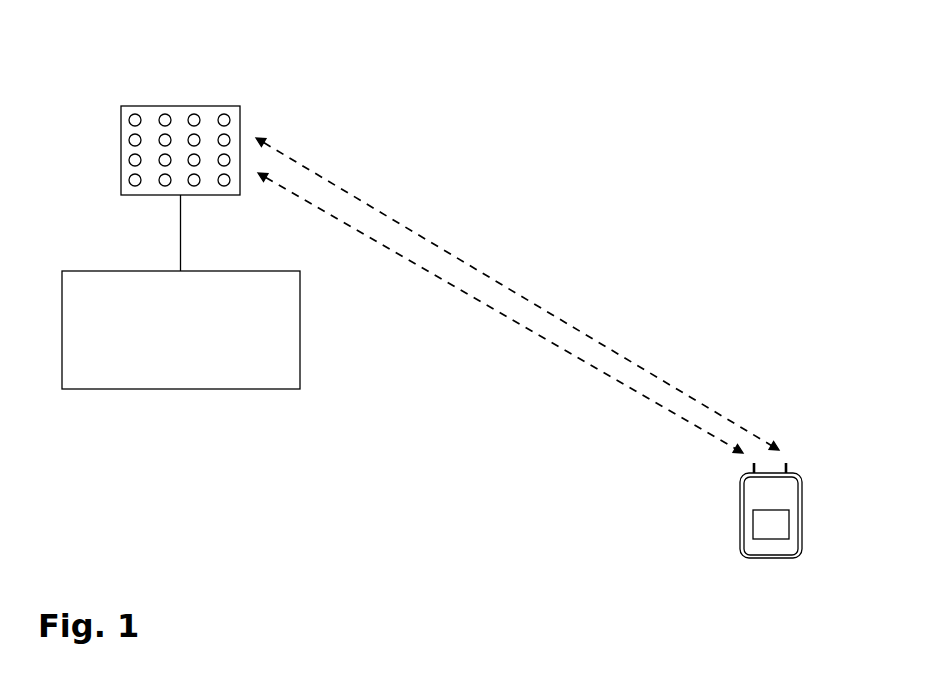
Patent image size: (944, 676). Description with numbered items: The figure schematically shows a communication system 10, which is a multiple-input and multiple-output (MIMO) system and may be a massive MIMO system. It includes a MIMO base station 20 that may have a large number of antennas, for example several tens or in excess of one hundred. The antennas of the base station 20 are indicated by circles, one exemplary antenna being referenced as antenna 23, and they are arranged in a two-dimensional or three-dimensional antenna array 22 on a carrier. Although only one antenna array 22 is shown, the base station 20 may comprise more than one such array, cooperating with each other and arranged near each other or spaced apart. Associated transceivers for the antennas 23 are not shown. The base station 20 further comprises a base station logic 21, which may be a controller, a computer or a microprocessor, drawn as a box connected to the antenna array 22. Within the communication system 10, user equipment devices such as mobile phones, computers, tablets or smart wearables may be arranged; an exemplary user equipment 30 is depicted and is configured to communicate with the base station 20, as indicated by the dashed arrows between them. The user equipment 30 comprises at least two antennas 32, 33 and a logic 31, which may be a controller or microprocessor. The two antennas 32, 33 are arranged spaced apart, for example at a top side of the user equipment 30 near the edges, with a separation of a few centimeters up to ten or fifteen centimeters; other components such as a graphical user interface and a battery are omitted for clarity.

The communication system 10 is at (736, 103).
The MIMO base station 20 is at (311, 62).
The base station logic 21 is at (299, 389).
The antenna array 22 is at (108, 201).
The antenna 23 is at (193, 114).
The user equipment 30 is at (742, 550).
The logic 31 is at (790, 532).
The antenna 32 is at (750, 472).
The antenna 33 is at (790, 470).